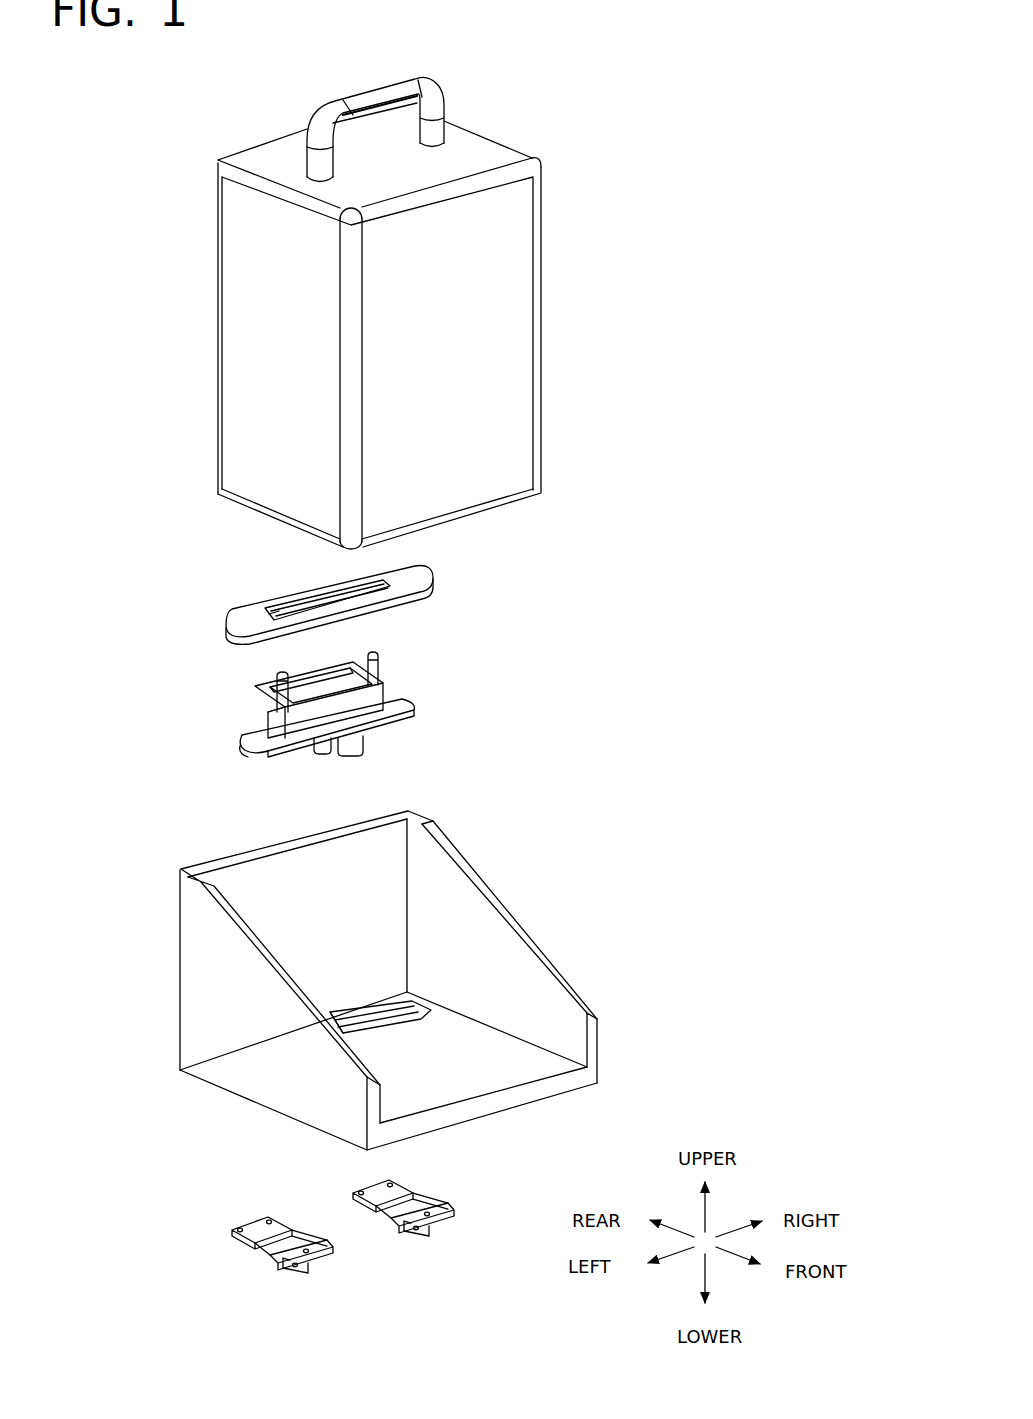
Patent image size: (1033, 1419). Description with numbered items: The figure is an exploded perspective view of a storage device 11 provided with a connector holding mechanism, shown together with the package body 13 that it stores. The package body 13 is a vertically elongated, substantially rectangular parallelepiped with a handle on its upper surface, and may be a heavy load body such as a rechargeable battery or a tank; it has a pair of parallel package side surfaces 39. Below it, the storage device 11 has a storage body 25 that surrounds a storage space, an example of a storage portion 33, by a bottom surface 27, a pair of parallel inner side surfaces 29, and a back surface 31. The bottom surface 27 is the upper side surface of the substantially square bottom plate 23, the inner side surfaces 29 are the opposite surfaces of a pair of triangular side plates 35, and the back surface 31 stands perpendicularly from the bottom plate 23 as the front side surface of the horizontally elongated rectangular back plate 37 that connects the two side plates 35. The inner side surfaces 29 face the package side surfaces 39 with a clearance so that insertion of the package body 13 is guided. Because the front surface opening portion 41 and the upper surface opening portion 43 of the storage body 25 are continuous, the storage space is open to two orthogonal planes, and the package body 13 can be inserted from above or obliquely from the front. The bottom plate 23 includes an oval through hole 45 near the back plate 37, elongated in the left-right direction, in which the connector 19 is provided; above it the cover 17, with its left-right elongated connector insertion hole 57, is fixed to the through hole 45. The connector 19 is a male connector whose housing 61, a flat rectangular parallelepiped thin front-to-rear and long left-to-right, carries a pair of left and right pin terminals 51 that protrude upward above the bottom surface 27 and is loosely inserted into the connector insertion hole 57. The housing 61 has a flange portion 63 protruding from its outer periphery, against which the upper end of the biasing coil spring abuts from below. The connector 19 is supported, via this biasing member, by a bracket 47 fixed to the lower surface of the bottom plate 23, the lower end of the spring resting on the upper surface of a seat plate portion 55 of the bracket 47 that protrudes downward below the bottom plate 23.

The storage device 11 is at (173, 598).
The package body 13 is at (219, 157).
The package side surfaces 39 is at (245, 304).
The cover 17 is at (428, 582).
The connector insertion hole 57 is at (290, 607).
The connector 19 is at (242, 718).
The pin terminals 51 is at (375, 660).
The housing 61 is at (375, 705).
The flange portion 63 is at (242, 745).
The storage body 25 is at (178, 867).
The back surface 31 is at (265, 872).
The upper surface opening portion 43 is at (313, 866).
The back plate 37 is at (396, 810).
The side plates 35 is at (270, 935).
The storage portion 33 is at (447, 883).
The inner side surfaces 29 is at (487, 932).
The front surface opening portion 41 is at (569, 1036).
The bottom surface 27 is at (440, 1090).
The through hole 45 is at (357, 1010).
The bottom plate 23 is at (535, 1095).
The bracket 47 is at (232, 1222).
The seat plate portion 55 is at (306, 1274).